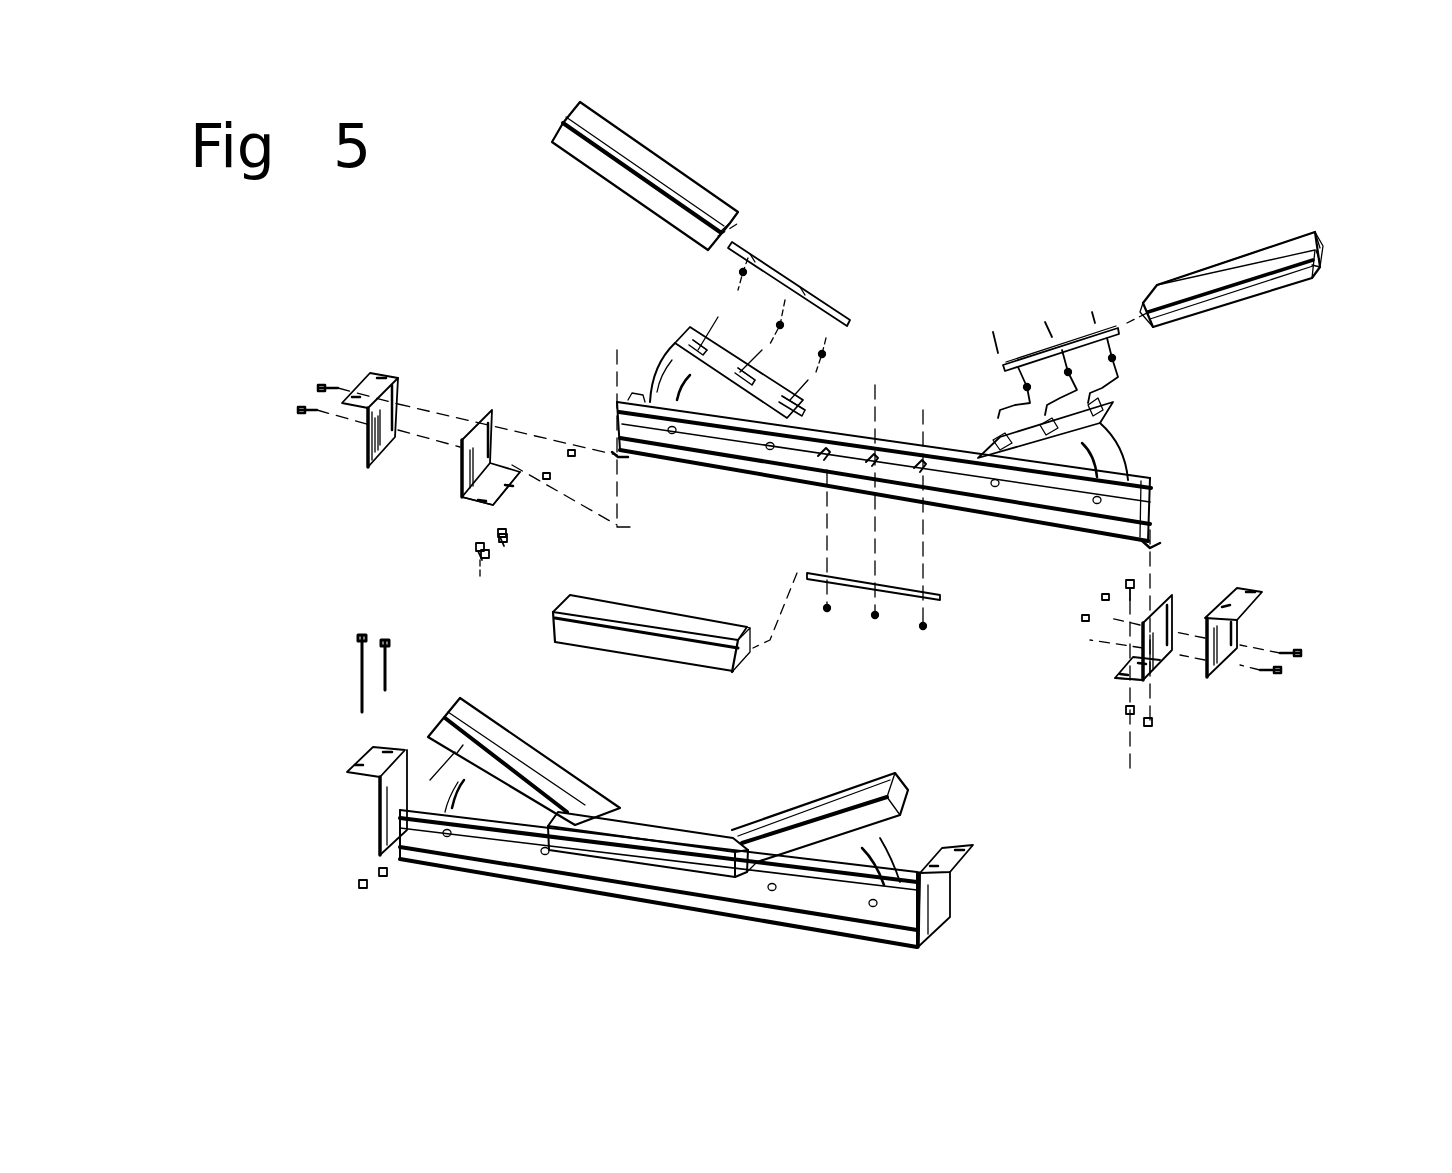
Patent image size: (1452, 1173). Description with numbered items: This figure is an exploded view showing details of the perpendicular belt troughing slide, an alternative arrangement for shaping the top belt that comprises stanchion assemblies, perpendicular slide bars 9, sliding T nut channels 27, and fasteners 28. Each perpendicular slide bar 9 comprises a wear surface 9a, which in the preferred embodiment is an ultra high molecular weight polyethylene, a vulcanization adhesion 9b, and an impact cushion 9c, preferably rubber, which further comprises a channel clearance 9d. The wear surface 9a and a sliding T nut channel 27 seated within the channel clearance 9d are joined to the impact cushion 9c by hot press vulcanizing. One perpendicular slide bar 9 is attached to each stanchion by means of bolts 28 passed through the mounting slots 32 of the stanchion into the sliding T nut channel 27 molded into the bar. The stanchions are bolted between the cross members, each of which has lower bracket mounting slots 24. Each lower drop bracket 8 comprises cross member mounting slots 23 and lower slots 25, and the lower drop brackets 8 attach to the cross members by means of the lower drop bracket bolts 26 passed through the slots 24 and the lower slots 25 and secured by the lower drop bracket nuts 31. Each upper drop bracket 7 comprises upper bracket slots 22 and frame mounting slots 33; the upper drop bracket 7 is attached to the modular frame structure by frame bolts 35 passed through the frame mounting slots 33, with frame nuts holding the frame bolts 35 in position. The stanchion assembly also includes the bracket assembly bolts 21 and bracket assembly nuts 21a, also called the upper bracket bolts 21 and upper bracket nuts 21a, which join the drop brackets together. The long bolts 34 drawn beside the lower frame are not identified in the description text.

The upper drop bracket 7 is at (360, 470).
The lower drop bracket 8 is at (473, 412).
The perpendicular slide bar 9 is at (642, 200).
The wear surface 9a is at (1282, 240).
The vulcanization adhesion 9b is at (1318, 248).
The impact cushion 9c is at (1318, 252).
The channel clearance 9d is at (1323, 268).
The bracket assembly bolts 21 is at (318, 388).
The bracket assembly nuts 21a is at (547, 475).
The upper bracket slots 22 is at (395, 440).
The cross member mounting slots 23 is at (472, 452).
The lower bracket mounting slots 24 is at (623, 454).
The lower slots 25 is at (522, 478).
The lower drop bracket bolts 26 is at (1140, 578).
The sliding T nut channel 27 is at (1000, 352).
The fasteners 28 is at (780, 323).
The lower drop bracket nuts 31 is at (503, 545).
The mounting slots 32 is at (693, 343).
The frame mounting slots 33 is at (352, 402).
The bolt 34 is at (385, 642).
The frame bolts 35 is at (383, 870).